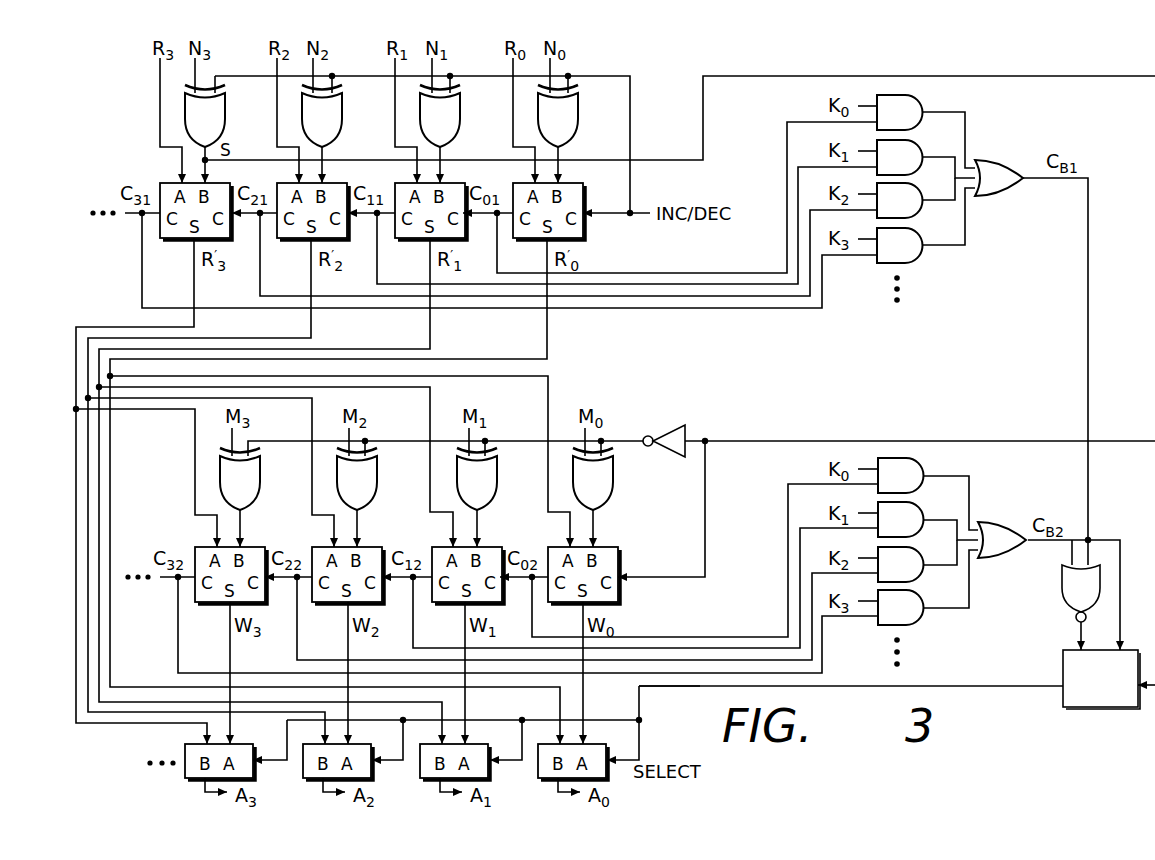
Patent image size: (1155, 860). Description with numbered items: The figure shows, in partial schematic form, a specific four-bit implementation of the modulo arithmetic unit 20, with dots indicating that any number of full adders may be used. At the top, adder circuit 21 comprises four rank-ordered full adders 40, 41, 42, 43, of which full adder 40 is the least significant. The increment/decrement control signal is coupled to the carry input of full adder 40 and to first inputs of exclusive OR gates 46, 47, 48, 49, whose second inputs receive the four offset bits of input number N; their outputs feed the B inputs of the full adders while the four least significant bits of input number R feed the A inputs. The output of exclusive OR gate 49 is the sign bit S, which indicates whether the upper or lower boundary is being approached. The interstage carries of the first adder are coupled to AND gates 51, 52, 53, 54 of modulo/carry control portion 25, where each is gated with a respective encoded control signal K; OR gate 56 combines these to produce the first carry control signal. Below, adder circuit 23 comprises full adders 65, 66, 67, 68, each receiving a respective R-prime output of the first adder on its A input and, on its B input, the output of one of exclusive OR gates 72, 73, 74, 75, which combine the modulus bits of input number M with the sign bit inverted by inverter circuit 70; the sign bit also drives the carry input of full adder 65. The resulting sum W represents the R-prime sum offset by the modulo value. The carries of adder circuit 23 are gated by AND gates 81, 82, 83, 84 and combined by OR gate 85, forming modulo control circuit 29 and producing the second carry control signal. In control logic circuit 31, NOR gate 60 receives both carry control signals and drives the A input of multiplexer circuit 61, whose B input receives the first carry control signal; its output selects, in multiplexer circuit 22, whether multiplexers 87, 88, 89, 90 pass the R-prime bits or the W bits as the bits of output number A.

The modulo arithmetic unit 20 is at (665, 704).
The adder circuit 21 is at (110, 103).
The multiplexer circuit 22 is at (137, 743).
The adder circuit 23 is at (167, 528).
The modulo/carry control portion 25 is at (1030, 137).
The modulo control circuit 29 is at (1004, 497).
The control logic circuit 31 is at (1005, 704).
The full adder circuit 40 is at (538, 241).
The full adder circuit 41 is at (420, 241).
The full adder circuit 42 is at (302, 241).
The full adder circuit 43 is at (186, 241).
The exclusive OR gate 46 is at (576, 123).
The exclusive OR gate 47 is at (459, 123).
The exclusive OR gate 48 is at (341, 123).
The exclusive OR gate 49 is at (225, 123).
The AND gate 51 is at (919, 122).
The AND gate 52 is at (919, 167).
The AND gate 53 is at (919, 210).
The AND gate 54 is at (919, 255).
The OR gate 56 is at (998, 199).
The NOR gate 60 is at (1062, 592).
The multiplexer circuit 61 is at (1064, 708).
The full adder 65 is at (574, 605).
The full adder 66 is at (458, 605).
The full adder 67 is at (338, 605).
The full adder 68 is at (221, 605).
The inverter circuit 70 is at (687, 433).
The exclusive OR gate 72 is at (612, 483).
The exclusive OR gate 73 is at (496, 483).
The exclusive OR gate 74 is at (376, 483).
The exclusive OR gate 75 is at (259, 483).
The AND gate 81 is at (920, 485).
The AND gate 82 is at (920, 529).
The AND gate 83 is at (920, 574).
The AND gate 84 is at (920, 617).
The OR gate 85 is at (998, 578).
The multiplexer 87 is at (539, 781).
The multiplexer 88 is at (421, 781).
The multiplexer 89 is at (304, 781).
The multiplexer 90 is at (186, 781).